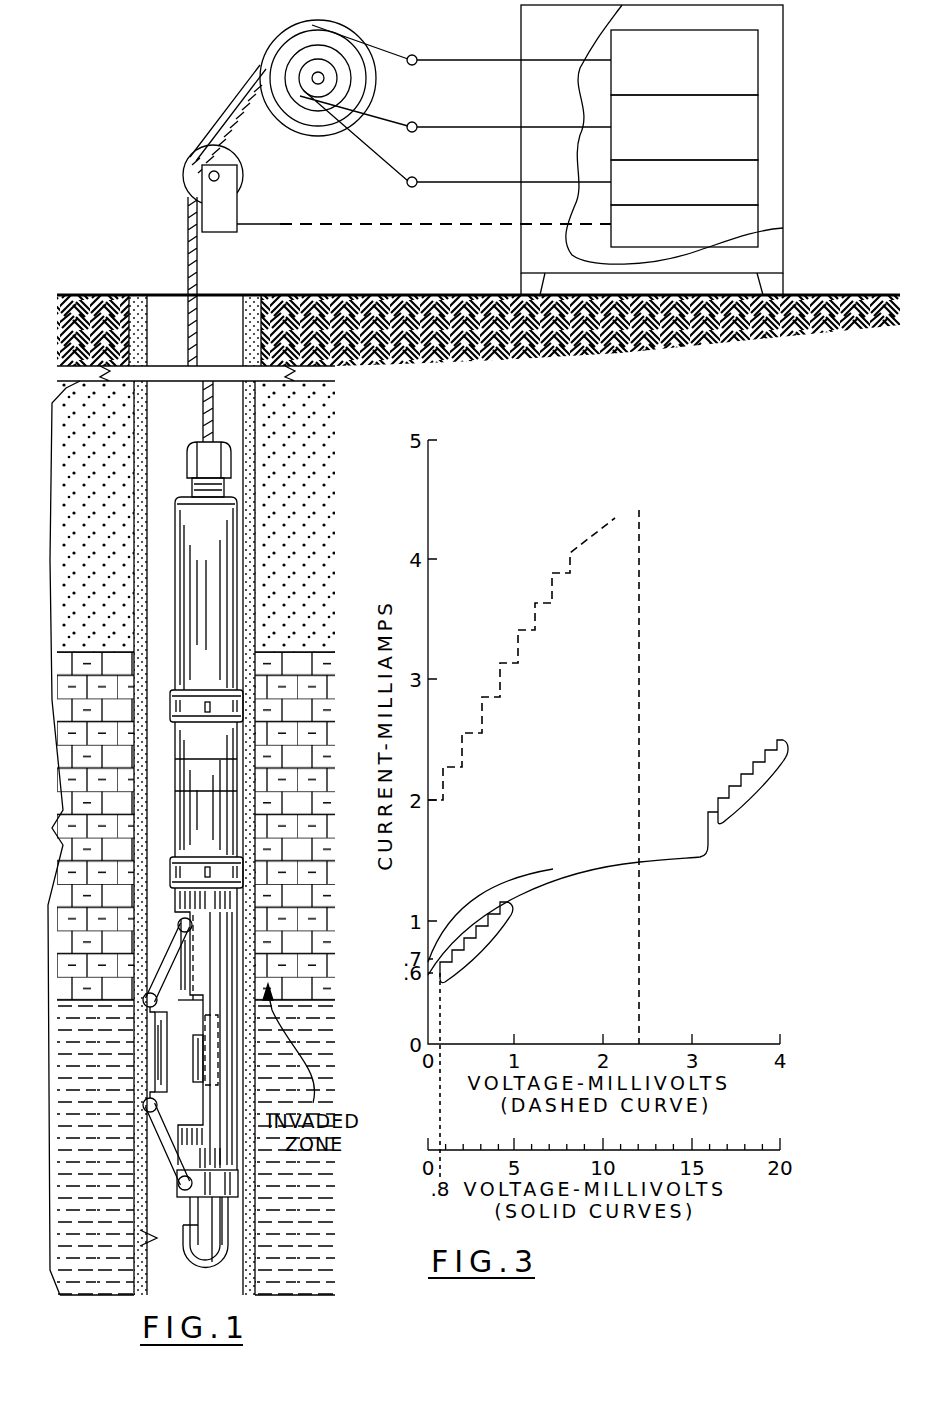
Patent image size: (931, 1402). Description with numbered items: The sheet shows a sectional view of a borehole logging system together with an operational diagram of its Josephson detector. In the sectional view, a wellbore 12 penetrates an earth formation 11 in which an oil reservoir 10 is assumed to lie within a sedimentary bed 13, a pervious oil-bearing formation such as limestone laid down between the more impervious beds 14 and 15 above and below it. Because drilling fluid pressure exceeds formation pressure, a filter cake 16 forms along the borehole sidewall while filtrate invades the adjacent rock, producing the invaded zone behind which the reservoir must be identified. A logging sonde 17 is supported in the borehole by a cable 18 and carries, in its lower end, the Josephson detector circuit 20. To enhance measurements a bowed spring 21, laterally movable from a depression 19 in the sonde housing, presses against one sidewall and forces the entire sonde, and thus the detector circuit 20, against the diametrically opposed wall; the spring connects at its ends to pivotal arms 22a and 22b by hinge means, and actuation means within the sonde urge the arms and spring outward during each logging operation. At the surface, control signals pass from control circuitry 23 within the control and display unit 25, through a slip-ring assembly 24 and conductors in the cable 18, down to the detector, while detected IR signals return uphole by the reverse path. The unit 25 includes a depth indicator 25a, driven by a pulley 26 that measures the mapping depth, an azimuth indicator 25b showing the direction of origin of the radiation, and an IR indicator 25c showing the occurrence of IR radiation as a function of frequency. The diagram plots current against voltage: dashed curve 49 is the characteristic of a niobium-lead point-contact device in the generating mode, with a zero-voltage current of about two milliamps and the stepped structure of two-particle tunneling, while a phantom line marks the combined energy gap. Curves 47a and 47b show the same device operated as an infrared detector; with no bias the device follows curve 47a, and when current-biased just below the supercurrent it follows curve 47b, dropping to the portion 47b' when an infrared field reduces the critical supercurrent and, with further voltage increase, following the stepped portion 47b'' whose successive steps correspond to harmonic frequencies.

In FIG. 1, the oil reservoir 10 is at (333, 828).
In FIG. 1, the earth formation 11 is at (55, 838).
In FIG. 1, the wellbore 12 is at (160, 415).
In FIG. 1, the sedimentary bed 13 is at (100, 837).
In FIG. 1, the impermeable bed 14 is at (301, 533).
In FIG. 1, the impermeable bed 15 is at (102, 1151).
In FIG. 1, the filter cake 16 is at (140, 1238).
In FIG. 1, the logging sonde 17 is at (175, 590).
In FIG. 1, the cable 18 is at (188, 258).
In FIG. 1, the depression 19 is at (203, 1006).
In FIG. 1, the Josephson detector circuit 20 is at (215, 772).
In FIG. 1, the bowed spring 21 is at (152, 1060).
In FIG. 1, the pivotal arm 22a is at (162, 1153).
In FIG. 1, the pivotal arm 22b is at (160, 958).
In FIG. 1, the control circuitry 23 is at (758, 127).
In FIG. 1, the slip-ring assembly 24 is at (270, 48).
In FIG. 1, the control and display unit 25 is at (545, 38).
In FIG. 1, the depth indicator 25a is at (758, 217).
In FIG. 1, the azimuth indicator 25b is at (758, 183).
In FIG. 1, the IR indicator 25c is at (758, 62).
In FIG. 1, the pulley 26 is at (189, 160).
In FIG. 3, the current-voltage curve 47a is at (527, 877).
In FIG. 3, the current-voltage curve 47b is at (573, 893).
In FIG. 3, the curve portion 47b' is at (487, 950).
In FIG. 3, the curve portion 47b'' is at (766, 782).
In FIG. 3, the dashed curve 49 is at (532, 632).